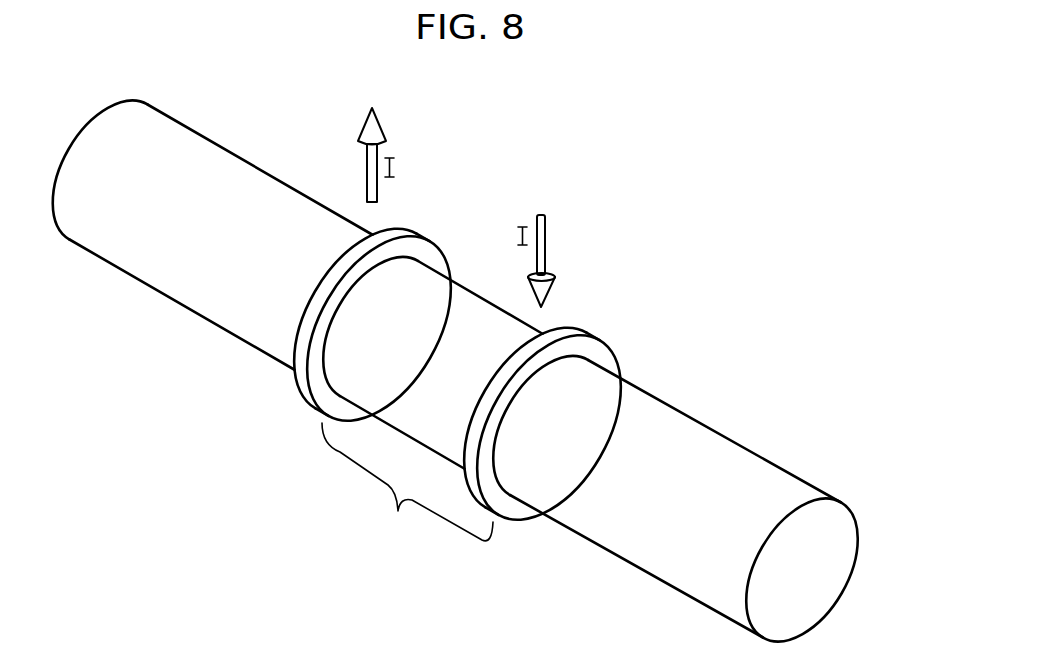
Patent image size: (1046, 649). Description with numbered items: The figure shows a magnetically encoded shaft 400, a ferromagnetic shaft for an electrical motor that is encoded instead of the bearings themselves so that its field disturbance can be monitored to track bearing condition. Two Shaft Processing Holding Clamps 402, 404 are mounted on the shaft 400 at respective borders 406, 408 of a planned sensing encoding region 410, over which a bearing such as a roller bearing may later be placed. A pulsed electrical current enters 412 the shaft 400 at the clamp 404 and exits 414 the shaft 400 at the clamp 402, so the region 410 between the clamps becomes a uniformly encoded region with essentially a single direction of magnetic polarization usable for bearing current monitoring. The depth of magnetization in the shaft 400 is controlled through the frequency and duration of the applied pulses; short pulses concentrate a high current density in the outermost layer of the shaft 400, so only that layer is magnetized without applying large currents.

The shaft 400 is at (165, 137).
The shaft processing holding clamp 402 is at (312, 405).
The shaft processing holding clamp 404 is at (500, 513).
The border 406 is at (442, 242).
The border 408 is at (562, 318).
The sensing encoding region 410 is at (407, 486).
The current entry 412 is at (545, 232).
The current exit 414 is at (375, 127).